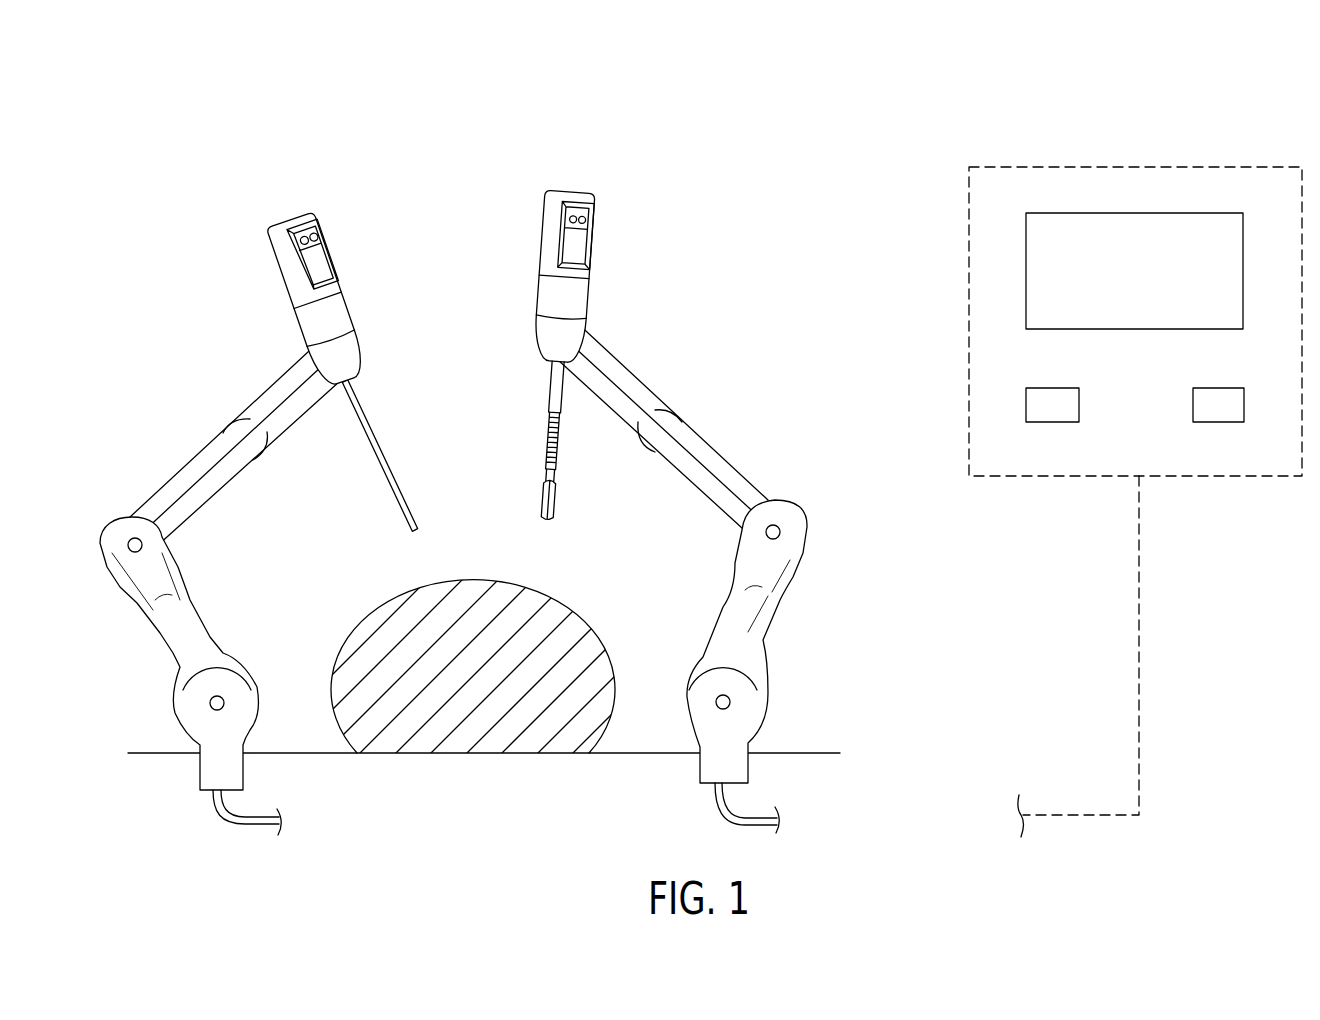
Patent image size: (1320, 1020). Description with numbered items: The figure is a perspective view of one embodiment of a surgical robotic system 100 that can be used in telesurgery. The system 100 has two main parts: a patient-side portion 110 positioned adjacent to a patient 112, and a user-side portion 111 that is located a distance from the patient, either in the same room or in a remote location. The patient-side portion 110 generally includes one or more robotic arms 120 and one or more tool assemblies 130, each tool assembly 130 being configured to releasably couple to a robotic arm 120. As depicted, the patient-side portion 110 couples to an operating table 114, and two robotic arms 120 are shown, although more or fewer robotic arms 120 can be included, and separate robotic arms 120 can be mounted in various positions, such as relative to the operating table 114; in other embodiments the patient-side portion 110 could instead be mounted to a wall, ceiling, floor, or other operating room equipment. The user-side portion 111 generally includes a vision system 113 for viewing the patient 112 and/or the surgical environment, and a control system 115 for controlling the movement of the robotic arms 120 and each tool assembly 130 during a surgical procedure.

The surgical robotic system 100 is at (490, 103).
The patient-side portion 110 is at (742, 256).
The user-side portion 111 is at (1209, 147).
The patient 112 is at (583, 617).
The vision system 113 is at (1083, 213).
The operating table 114 is at (813, 752).
The control system 115 is at (1052, 422).
The robotic arm 120 is at (190, 456).
The tool assembly 130 is at (340, 252).